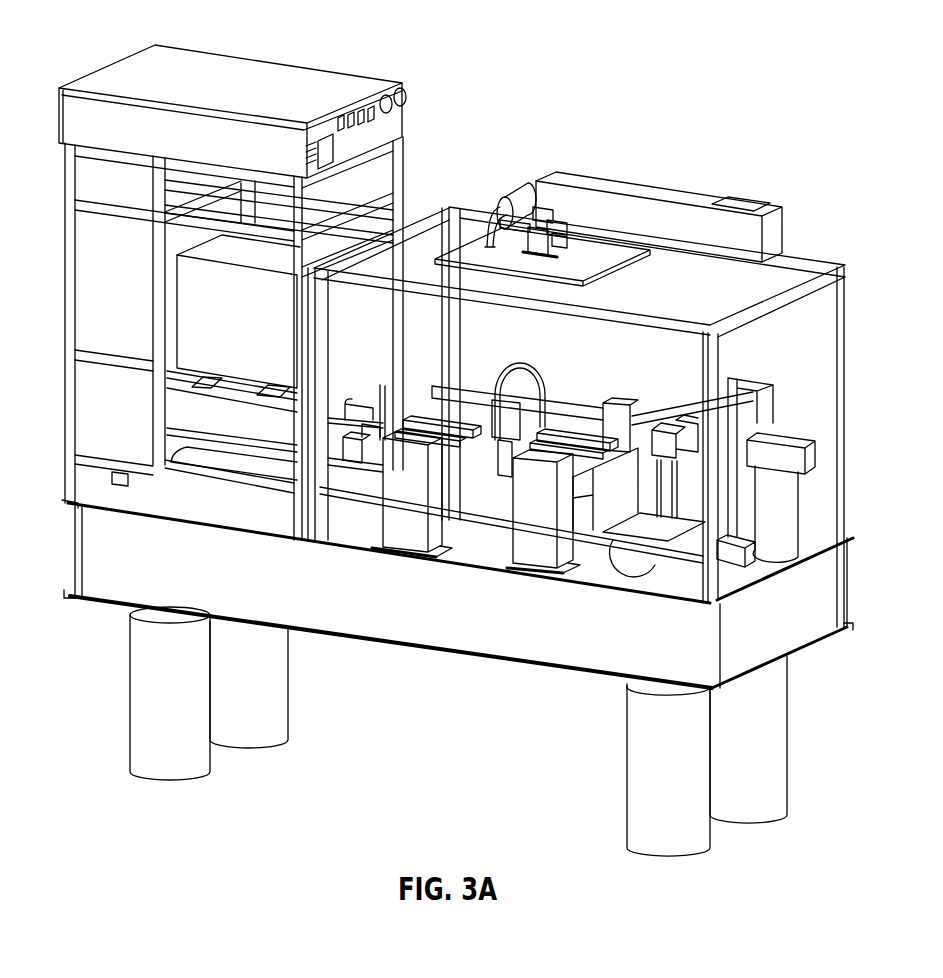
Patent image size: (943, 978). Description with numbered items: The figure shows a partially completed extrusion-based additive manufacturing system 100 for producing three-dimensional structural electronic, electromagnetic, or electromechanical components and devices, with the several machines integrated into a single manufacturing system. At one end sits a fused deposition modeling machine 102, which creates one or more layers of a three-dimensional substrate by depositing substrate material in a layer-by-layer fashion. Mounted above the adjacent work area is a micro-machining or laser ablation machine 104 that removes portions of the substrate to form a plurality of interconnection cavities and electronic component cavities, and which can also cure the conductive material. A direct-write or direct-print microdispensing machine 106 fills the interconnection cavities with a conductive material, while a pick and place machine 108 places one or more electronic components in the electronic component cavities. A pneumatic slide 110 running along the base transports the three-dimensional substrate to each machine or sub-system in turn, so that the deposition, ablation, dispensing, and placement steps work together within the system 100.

The extrusion-based additive manufacturing system 100 is at (118, 27).
The fused deposition modeling machine 102 is at (180, 405).
The laser ablation machine 104 is at (657, 198).
The direct-print microdispensing machine 106 is at (633, 522).
The pick and place machine 108 is at (503, 460).
The pneumatic slide 110 is at (372, 505).